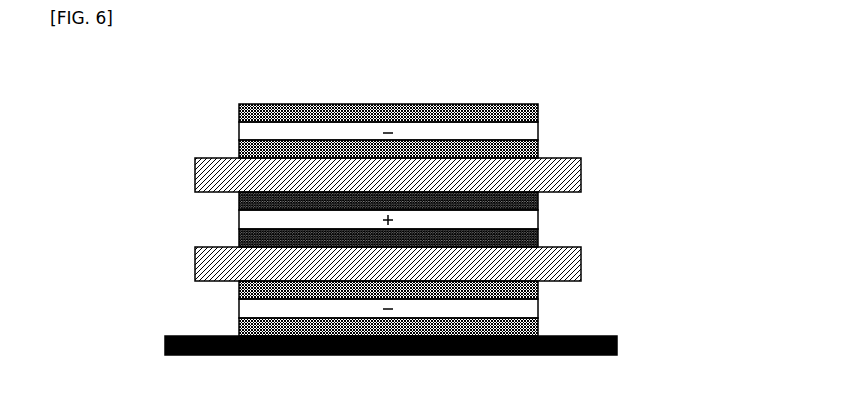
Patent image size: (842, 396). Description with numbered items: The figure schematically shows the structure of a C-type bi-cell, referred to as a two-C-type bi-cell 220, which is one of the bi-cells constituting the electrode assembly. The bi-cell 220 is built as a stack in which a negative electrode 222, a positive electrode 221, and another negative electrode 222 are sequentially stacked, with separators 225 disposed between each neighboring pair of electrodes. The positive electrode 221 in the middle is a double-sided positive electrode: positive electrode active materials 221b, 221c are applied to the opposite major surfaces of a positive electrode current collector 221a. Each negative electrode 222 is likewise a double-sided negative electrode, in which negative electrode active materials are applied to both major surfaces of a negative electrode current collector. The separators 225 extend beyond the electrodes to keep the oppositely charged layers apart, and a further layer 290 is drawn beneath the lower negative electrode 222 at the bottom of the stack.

The 2C-type bi-cell 220 is at (703, 83).
The positive electrode 221 is at (115, 184).
The positive electrode current collector 221a is at (239, 216).
The positive electrode active material 221b is at (239, 200).
The positive electrode active material 221c is at (239, 236).
The negative electrode 222 is at (115, 83).
The separator 225 is at (581, 172).
The electrode 290 is at (617, 343).